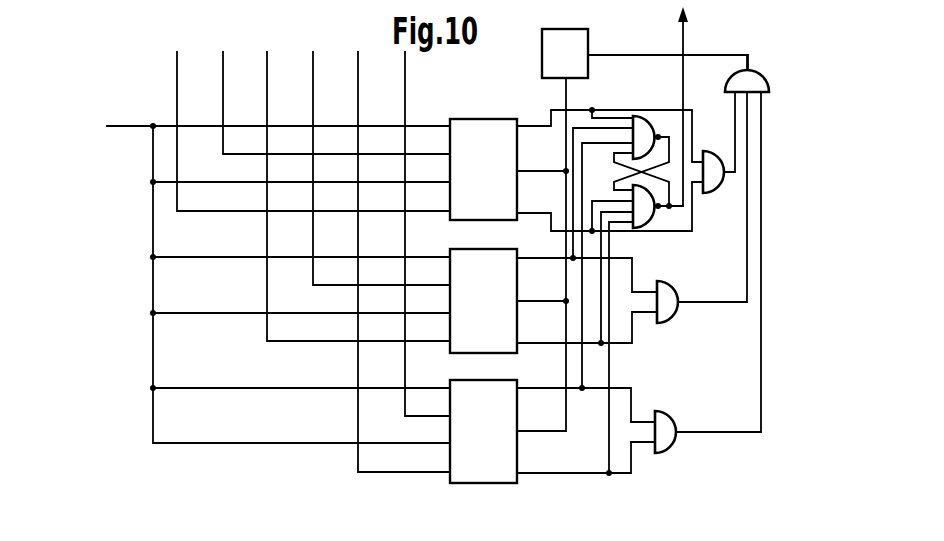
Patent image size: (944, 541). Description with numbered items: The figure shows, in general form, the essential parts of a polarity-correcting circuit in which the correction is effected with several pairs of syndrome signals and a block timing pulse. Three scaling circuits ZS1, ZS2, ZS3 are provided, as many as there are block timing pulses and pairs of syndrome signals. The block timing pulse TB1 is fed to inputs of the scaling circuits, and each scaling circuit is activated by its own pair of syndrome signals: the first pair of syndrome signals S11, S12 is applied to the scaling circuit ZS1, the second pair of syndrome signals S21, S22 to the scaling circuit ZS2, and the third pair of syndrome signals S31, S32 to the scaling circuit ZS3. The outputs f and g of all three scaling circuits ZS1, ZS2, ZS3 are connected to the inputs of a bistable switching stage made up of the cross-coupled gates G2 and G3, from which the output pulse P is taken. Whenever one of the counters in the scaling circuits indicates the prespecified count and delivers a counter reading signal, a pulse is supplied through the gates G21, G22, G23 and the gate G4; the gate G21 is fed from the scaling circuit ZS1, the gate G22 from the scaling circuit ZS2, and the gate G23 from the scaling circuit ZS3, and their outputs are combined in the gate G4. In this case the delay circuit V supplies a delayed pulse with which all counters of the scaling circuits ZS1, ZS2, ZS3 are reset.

The block timing pulse TB1 is at (261, 276).
The syndrome signal S11 is at (299, 131).
The syndrome signal S12 is at (321, 103).
The syndrome signal S21 is at (344, 196).
The syndrome signal S22 is at (366, 168).
The syndrome signal S31 is at (389, 262).
The syndrome signal S32 is at (411, 234).
The scaling circuit ZS1 is at (567, 167).
The scaling circuit ZS2 is at (544, 292).
The scaling circuit ZS3 is at (543, 422).
The delay circuit V is at (645, 230).
The gate G2 is at (658, 113).
The gate G3 is at (640, 232).
The gate G4 is at (729, 86).
The gate G21 is at (706, 192).
The gate G22 is at (671, 285).
The gate G23 is at (671, 406).
The pulse P is at (692, 104).